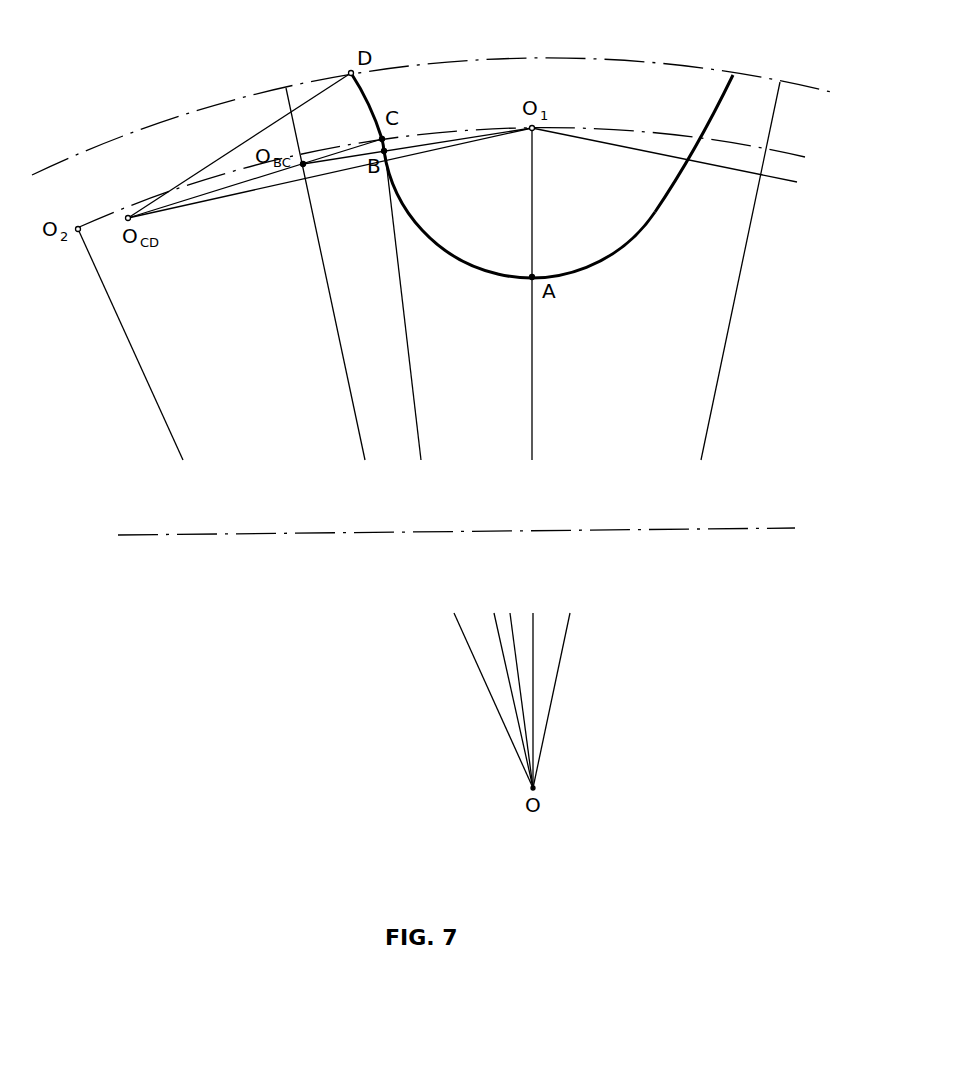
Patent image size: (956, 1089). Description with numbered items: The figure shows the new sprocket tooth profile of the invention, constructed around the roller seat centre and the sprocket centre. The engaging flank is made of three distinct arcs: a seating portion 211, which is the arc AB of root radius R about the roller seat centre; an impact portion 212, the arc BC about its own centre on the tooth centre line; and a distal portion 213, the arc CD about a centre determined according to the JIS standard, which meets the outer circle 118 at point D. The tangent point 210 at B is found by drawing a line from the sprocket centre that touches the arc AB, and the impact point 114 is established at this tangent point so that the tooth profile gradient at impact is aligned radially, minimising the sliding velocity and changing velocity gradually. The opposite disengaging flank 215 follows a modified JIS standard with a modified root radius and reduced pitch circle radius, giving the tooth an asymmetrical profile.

The outer circle 118 is at (575, 56).
The distal portion 213 is at (371, 100).
The impact portion 212 is at (387, 138).
The seating portion 211 is at (497, 275).
The disengaging flank 215 is at (612, 261).
The tangent point 210 is at (390, 152).
The impact point 114 is at (389, 155).